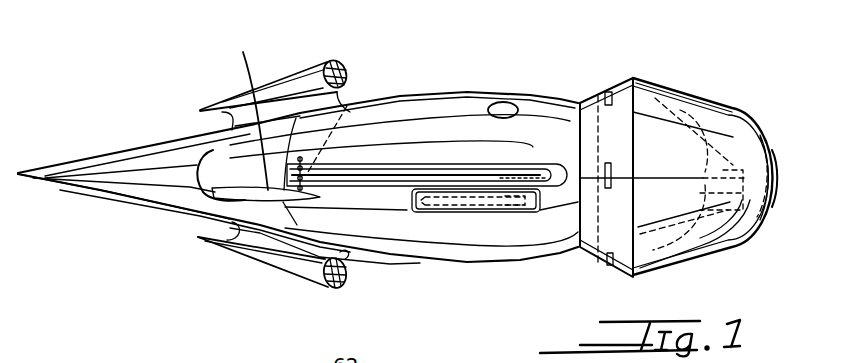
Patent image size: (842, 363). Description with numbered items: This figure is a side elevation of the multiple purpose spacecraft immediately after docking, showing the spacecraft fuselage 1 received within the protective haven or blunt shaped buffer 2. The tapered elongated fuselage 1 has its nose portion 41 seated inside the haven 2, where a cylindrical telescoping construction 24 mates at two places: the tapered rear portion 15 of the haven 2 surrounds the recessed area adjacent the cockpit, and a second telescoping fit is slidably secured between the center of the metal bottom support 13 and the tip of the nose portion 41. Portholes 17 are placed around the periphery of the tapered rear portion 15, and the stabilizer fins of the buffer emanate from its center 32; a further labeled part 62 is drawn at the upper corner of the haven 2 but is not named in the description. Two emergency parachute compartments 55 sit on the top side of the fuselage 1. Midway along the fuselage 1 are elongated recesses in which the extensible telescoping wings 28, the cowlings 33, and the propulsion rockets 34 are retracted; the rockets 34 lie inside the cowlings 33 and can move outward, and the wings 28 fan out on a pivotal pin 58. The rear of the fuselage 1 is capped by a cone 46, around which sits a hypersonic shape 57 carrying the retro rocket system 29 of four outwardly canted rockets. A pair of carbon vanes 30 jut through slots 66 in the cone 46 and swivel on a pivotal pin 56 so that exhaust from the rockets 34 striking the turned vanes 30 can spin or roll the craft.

The spacecraft fuselage 1 is at (470, 82).
The protective haven or blunt shaped buffer 2 is at (712, 87).
The metal bottom support 13 is at (753, 195).
The tapered rear portion 15 is at (614, 267).
The portholes 17 is at (612, 173).
The cylindrical telescoping construction 24 is at (723, 170).
The extensible telescoping wings 28 is at (473, 175).
The retro rocket system 29 is at (294, 76).
The carbon vanes 30 is at (197, 171).
The center of the haven or buffer 32 is at (784, 172).
The cowlings 33 is at (473, 209).
The propulsion rockets 34 is at (497, 200).
The nose portion 41 is at (775, 198).
The cone 46 is at (253, 170).
The emergency parachute compartments 55 is at (507, 108).
The pivotal pin 56 is at (230, 219).
The hypersonic shape 57 is at (110, 191).
The pivotal pin 58 is at (347, 106).
The frame corner 62 is at (635, 76).
The slots 66 is at (244, 54).